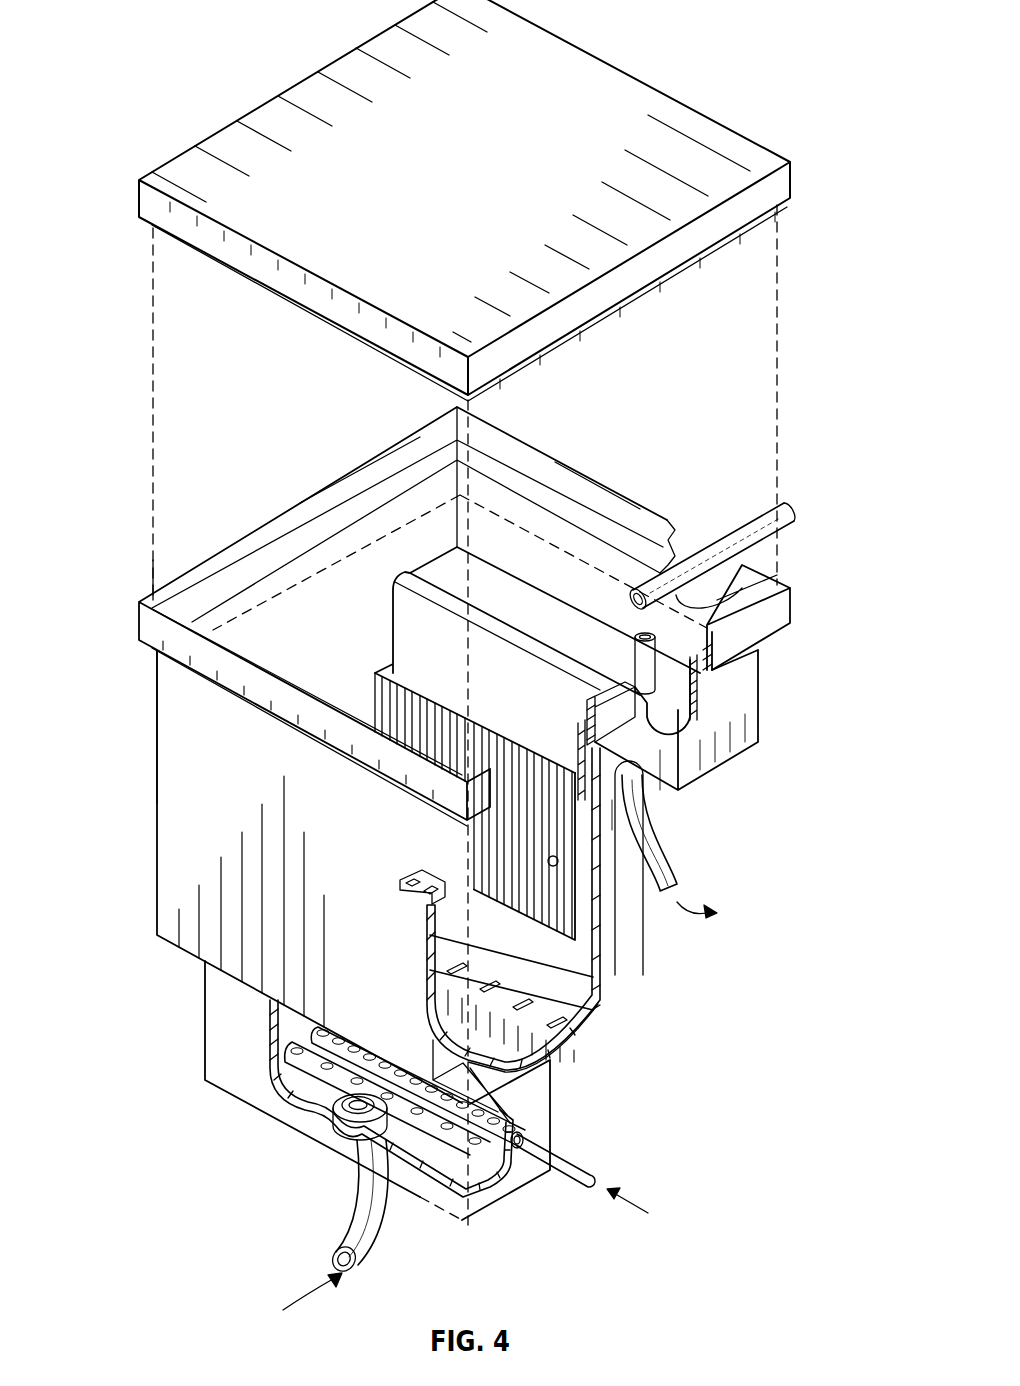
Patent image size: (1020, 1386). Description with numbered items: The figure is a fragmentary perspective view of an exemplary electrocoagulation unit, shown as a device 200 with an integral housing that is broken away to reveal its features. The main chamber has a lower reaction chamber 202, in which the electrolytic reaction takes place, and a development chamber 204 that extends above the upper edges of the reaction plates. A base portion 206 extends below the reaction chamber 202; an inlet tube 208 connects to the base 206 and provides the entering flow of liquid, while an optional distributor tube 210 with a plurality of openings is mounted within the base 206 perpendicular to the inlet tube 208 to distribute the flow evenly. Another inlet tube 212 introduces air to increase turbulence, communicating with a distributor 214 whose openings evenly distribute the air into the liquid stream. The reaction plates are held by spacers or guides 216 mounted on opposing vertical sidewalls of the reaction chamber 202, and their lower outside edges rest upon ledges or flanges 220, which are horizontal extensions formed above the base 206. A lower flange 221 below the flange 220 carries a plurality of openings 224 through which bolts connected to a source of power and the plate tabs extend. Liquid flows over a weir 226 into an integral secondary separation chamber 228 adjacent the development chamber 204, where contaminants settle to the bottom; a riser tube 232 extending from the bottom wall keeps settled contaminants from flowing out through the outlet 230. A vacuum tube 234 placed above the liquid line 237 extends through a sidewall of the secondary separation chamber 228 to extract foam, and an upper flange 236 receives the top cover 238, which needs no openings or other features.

The device 200 is at (136, 586).
The reaction chamber 202 is at (150, 804).
The development chamber 204 is at (150, 661).
The base portion 206 is at (205, 1031).
The inlet tube 208 is at (340, 1216).
The distributor tube 210 is at (342, 1080).
The inlet tube 212 is at (588, 1169).
The distributor 214 is at (385, 1062).
The spacers or guides 216 is at (428, 894).
The ledges or flanges 220 is at (605, 986).
The lower flange 221 is at (588, 1053).
The openings 224 is at (498, 978).
The weir 226 is at (420, 626).
The secondary separation chamber 228 is at (758, 691).
The outlet 230 is at (675, 856).
The riser tube 232 is at (635, 646).
The vacuum tube 234 is at (752, 517).
The upper flange 236 is at (138, 621).
The liquid line 237 is at (345, 547).
The top cover 238 is at (594, 70).